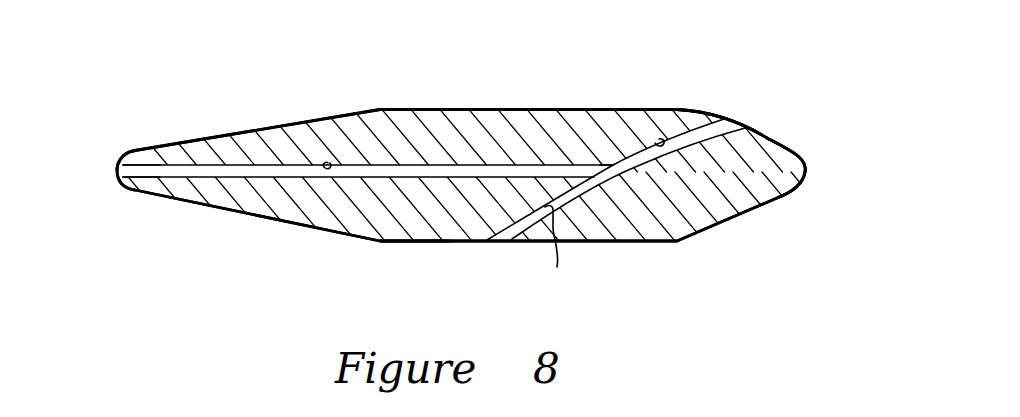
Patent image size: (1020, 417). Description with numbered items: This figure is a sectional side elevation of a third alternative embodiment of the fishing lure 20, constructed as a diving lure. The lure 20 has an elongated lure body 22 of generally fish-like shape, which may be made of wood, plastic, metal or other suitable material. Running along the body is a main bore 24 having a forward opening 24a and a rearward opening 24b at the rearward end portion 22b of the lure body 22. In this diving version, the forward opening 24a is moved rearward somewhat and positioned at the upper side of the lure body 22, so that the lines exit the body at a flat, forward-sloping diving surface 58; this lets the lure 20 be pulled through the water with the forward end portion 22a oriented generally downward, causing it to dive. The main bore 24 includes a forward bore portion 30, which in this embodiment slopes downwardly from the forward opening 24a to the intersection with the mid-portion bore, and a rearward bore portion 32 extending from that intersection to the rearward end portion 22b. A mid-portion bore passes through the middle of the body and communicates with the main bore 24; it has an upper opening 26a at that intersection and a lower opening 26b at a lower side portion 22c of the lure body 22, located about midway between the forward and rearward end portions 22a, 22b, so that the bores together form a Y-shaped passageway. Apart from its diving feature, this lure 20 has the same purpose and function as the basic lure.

The fishing lure 20 is at (515, 89).
The lure body 22 is at (448, 110).
The forward end portion 22a is at (800, 190).
The rearward end portion 22b is at (130, 152).
The lower side portion 22c is at (410, 241).
The main bore 24 is at (227, 178).
The forward opening 24a is at (655, 146).
The rearward opening 24b is at (118, 172).
The upper opening 26a is at (592, 179).
The lower opening 26b is at (490, 242).
The forward bore portion 30 is at (655, 143).
The rearward bore portion 32 is at (330, 163).
The diving surface 58 is at (767, 138).